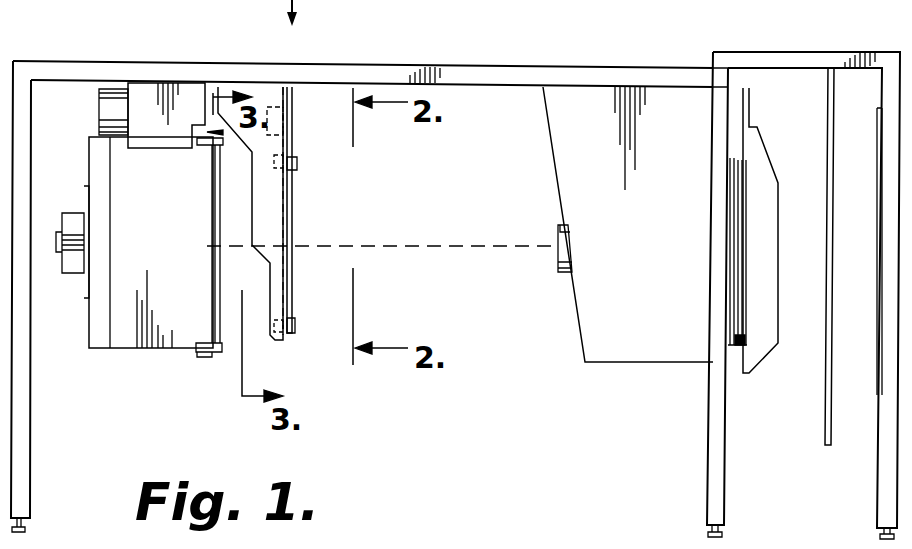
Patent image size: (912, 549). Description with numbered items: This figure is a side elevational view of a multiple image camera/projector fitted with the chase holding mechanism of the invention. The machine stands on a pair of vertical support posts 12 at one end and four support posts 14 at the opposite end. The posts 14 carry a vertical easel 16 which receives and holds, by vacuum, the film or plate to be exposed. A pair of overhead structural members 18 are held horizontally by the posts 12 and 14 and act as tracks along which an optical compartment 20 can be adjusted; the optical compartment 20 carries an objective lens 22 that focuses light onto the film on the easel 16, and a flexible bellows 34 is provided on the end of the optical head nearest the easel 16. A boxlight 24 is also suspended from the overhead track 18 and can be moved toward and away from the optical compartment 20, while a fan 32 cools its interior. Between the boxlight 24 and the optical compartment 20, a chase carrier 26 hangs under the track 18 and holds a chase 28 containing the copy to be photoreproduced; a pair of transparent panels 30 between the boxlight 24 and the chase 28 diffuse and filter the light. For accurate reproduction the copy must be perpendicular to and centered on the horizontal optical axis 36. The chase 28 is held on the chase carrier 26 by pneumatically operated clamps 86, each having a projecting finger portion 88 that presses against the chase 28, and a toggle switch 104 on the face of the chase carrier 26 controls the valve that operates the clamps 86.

The vertical support posts 12 is at (22, 479).
The support posts 14 is at (713, 462).
The vertical easel 16 is at (826, 422).
The overhead structural members 18 is at (481, 70).
The optical compartment 20 is at (614, 350).
The objective lens 22 is at (558, 272).
The boxlight 24 is at (176, 338).
The chase carrier 26 is at (263, 197).
The chase 28 is at (294, 212).
The transparent panels 30 is at (213, 270).
The fan 32 is at (72, 213).
The flexible bellows 34 is at (738, 348).
The optical axis 36 is at (483, 250).
The clamp 86 is at (298, 158).
The finger portion 88 is at (298, 170).
The toggle switch 104 is at (293, 125).